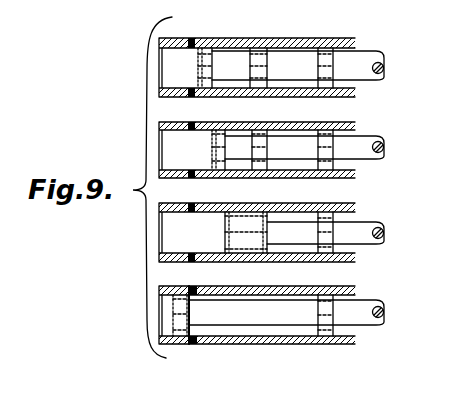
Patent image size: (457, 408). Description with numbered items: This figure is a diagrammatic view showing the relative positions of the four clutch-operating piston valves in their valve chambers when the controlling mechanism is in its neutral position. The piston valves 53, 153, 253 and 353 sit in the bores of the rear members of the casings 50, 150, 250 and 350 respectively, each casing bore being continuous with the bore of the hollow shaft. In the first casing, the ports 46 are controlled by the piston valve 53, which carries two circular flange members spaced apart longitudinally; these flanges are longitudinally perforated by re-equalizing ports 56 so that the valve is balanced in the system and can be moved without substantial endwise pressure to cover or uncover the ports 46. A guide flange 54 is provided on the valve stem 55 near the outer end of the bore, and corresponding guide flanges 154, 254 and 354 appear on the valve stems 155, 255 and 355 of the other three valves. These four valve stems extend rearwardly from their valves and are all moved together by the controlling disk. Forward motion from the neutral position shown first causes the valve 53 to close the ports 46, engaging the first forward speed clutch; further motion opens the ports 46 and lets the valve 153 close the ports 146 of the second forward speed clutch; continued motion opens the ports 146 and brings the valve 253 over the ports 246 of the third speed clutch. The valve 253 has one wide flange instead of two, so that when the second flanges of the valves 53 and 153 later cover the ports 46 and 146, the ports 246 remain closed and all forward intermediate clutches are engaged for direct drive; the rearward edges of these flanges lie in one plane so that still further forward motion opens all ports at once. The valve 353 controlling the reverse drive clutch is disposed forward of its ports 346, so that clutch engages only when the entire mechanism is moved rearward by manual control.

The casing 50 is at (173, 39).
The ports 46 is at (195, 41).
The piston valve 53 is at (242, 62).
The guide flange 54 is at (328, 48).
The valve stem 55 is at (383, 68).
The re-equalizing ports 56 is at (214, 67).
The casing 150 is at (178, 122).
The ports 146 is at (197, 150).
The piston valve 153 is at (245, 138).
The guide flange 154 is at (328, 131).
The valve stem 155 is at (383, 146).
The casing 250 is at (186, 200).
The ports 246 is at (218, 232).
The piston valve 253 is at (285, 222).
The guide flange 254 is at (328, 212).
The valve stem 255 is at (383, 233).
The casing 350 is at (178, 287).
The ports 346 is at (193, 296).
The piston valve 353 is at (278, 308).
The guide flange 354 is at (328, 297).
The valve stem 355 is at (383, 314).